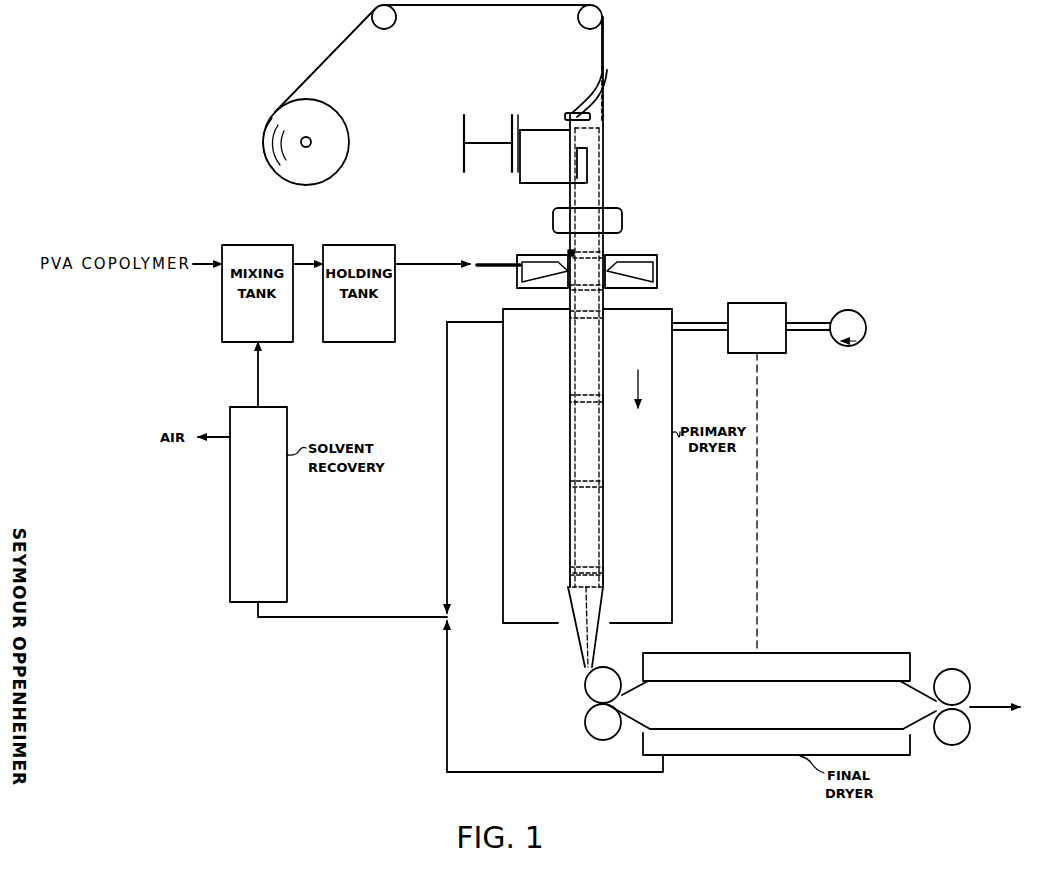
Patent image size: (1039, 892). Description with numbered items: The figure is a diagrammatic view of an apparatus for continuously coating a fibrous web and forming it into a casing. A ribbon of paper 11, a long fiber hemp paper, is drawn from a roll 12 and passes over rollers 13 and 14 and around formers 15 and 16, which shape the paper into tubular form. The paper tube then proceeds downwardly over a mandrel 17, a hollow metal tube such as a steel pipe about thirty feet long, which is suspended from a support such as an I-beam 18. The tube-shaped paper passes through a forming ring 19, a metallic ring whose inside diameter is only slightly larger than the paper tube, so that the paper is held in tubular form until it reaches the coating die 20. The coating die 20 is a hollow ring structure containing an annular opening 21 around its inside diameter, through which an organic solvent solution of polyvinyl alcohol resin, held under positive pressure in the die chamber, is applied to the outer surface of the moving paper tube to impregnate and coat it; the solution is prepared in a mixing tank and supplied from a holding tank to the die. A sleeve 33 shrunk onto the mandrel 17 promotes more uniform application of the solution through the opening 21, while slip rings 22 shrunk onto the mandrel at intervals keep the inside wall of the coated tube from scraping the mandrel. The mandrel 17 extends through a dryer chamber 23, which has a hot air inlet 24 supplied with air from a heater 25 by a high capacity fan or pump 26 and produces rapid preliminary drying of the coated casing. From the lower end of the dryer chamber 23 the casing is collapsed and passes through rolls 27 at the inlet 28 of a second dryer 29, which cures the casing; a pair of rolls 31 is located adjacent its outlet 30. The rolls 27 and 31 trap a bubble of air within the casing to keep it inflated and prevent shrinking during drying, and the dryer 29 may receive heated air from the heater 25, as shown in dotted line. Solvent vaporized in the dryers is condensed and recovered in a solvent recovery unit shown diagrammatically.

The ribbon of paper 11 is at (492, 5).
The roll 12 is at (331, 176).
The roller 13 is at (387, 29).
The roller 14 is at (581, 27).
The former 15 is at (605, 95).
The former 16 is at (575, 165).
The mandrel 17 is at (583, 378).
The I-beam 18 is at (464, 173).
The forming ring 19 is at (618, 210).
The coating die 20 is at (640, 272).
The annular opening 21 is at (560, 262).
The slip rings 22 is at (570, 318).
The dryer chamber 23 is at (503, 519).
The hot air inlet 24 is at (716, 331).
The heater 25 is at (781, 303).
The fan or pump 26 is at (861, 313).
The rolls 27 is at (603, 668).
The inlet 28 is at (648, 730).
The dryer 29 is at (742, 756).
The outlet 30 is at (910, 733).
The rolls 31 is at (951, 670).
The sleeve 33 is at (569, 252).